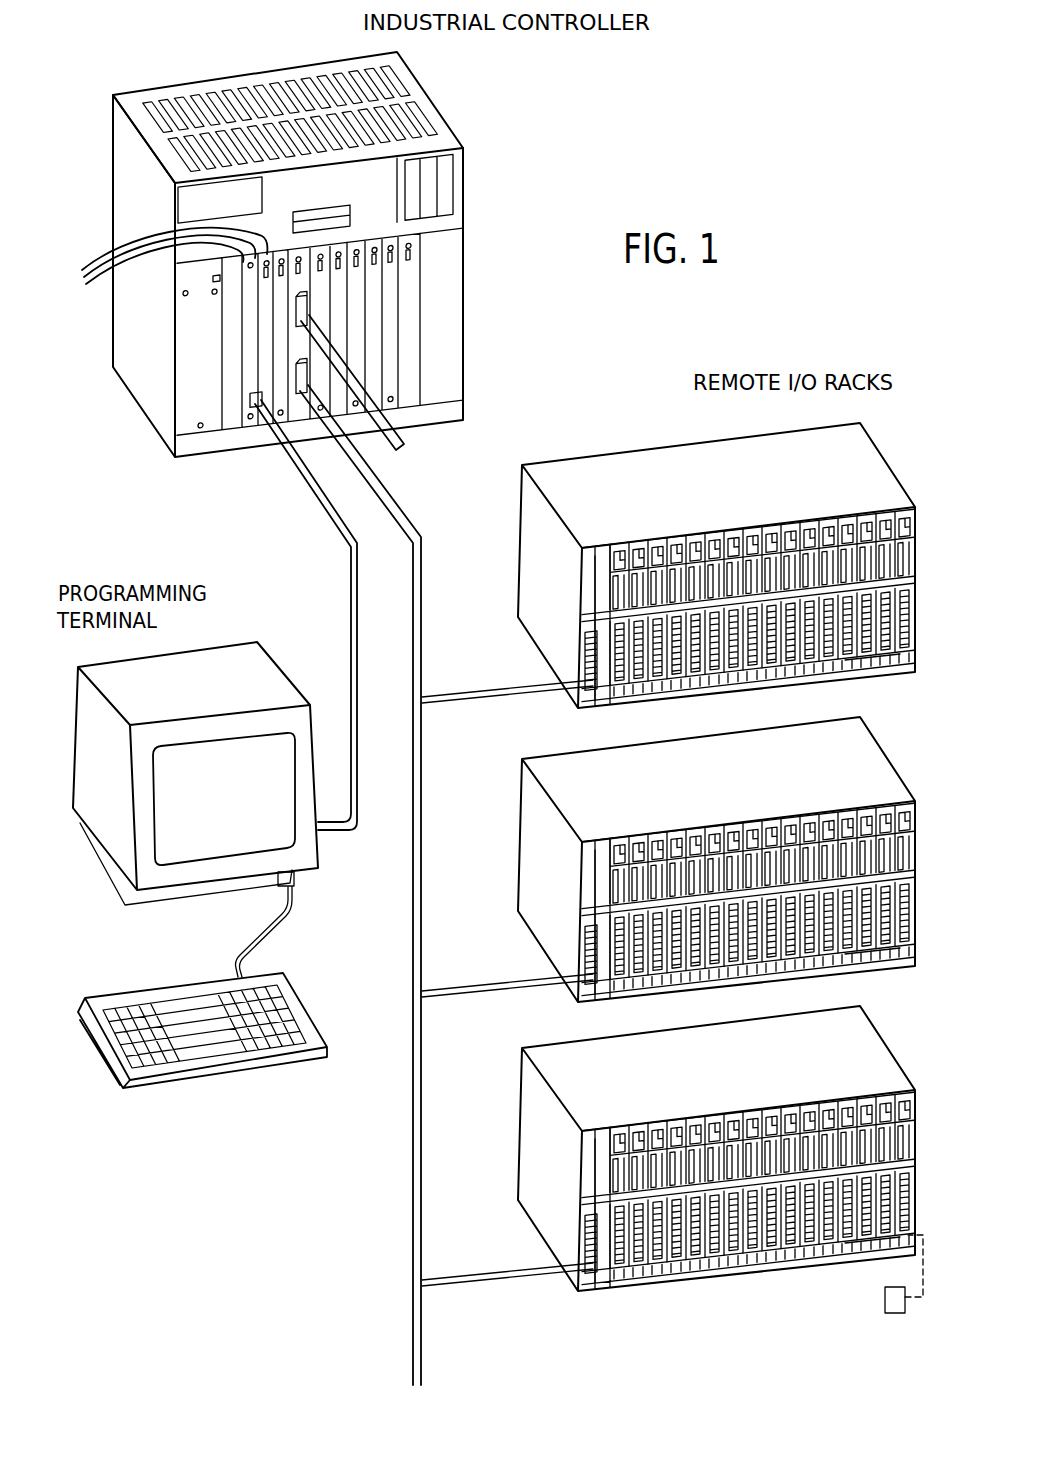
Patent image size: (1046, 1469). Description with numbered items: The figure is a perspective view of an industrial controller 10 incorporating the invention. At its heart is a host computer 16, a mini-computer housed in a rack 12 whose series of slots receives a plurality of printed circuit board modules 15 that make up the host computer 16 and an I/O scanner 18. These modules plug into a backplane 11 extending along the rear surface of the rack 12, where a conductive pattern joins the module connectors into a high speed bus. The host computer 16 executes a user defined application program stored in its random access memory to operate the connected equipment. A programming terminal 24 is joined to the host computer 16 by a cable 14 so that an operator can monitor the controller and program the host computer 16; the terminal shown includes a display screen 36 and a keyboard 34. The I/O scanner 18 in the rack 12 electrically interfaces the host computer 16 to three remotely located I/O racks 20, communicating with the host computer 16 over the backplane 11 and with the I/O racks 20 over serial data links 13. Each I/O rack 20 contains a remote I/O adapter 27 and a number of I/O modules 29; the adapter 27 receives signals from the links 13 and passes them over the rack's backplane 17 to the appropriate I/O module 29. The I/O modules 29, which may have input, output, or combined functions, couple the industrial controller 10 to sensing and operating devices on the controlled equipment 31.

The industrial controller 10 is at (275, 259).
The backplane 11 is at (262, 72).
The rack 12 is at (442, 117).
The serial data links 13 is at (405, 440).
The cable 14 is at (335, 527).
The printed circuit board modules 15 is at (96, 289).
The host computer 16 is at (232, 406).
The backplane 17 is at (668, 852).
The I/O scanner 18 is at (302, 428).
The I/O racks 20 is at (668, 859).
The programming terminal 24 is at (192, 872).
The remote I/O adapter 27 is at (592, 602).
The I/O modules 29 is at (897, 657).
The controlled equipment 31 is at (892, 1300).
The keyboard 34 is at (147, 1080).
The CRT display screen 36 is at (170, 835).